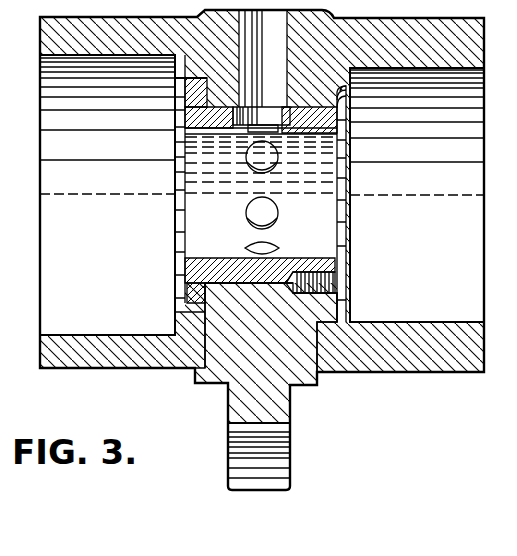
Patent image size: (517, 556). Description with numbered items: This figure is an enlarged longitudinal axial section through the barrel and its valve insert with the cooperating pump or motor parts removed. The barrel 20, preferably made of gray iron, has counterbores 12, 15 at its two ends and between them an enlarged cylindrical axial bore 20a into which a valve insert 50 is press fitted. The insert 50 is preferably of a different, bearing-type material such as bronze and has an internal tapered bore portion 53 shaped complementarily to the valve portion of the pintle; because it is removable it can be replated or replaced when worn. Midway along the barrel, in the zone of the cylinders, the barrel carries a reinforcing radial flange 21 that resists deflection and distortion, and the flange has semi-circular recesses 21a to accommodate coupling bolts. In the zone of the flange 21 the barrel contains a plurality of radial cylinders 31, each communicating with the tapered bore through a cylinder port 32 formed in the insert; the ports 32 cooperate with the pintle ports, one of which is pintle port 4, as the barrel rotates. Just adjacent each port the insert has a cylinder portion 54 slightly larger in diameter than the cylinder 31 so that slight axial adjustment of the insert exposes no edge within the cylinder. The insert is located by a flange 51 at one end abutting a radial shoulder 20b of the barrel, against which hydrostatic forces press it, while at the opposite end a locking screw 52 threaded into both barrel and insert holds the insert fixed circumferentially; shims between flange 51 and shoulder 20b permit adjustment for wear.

The pintle port 4 is at (277, 35).
The counterbore 12 is at (168, 331).
The counterbore 15 is at (392, 320).
The barrel 20 is at (318, 360).
The axial bore 20a is at (237, 283).
The radial shoulder 20b is at (205, 294).
The reinforcing radial flange 21 is at (289, 404).
The semi-circular recess 21a is at (288, 453).
The radial cylinder 31 is at (275, 98).
The cylinder port 32 is at (263, 166).
The valve insert 50 is at (338, 263).
The flange 51 is at (197, 283).
The locking screw 52 is at (340, 277).
The tapered bore portion 53 is at (285, 258).
The cylinder portion 54 is at (282, 117).